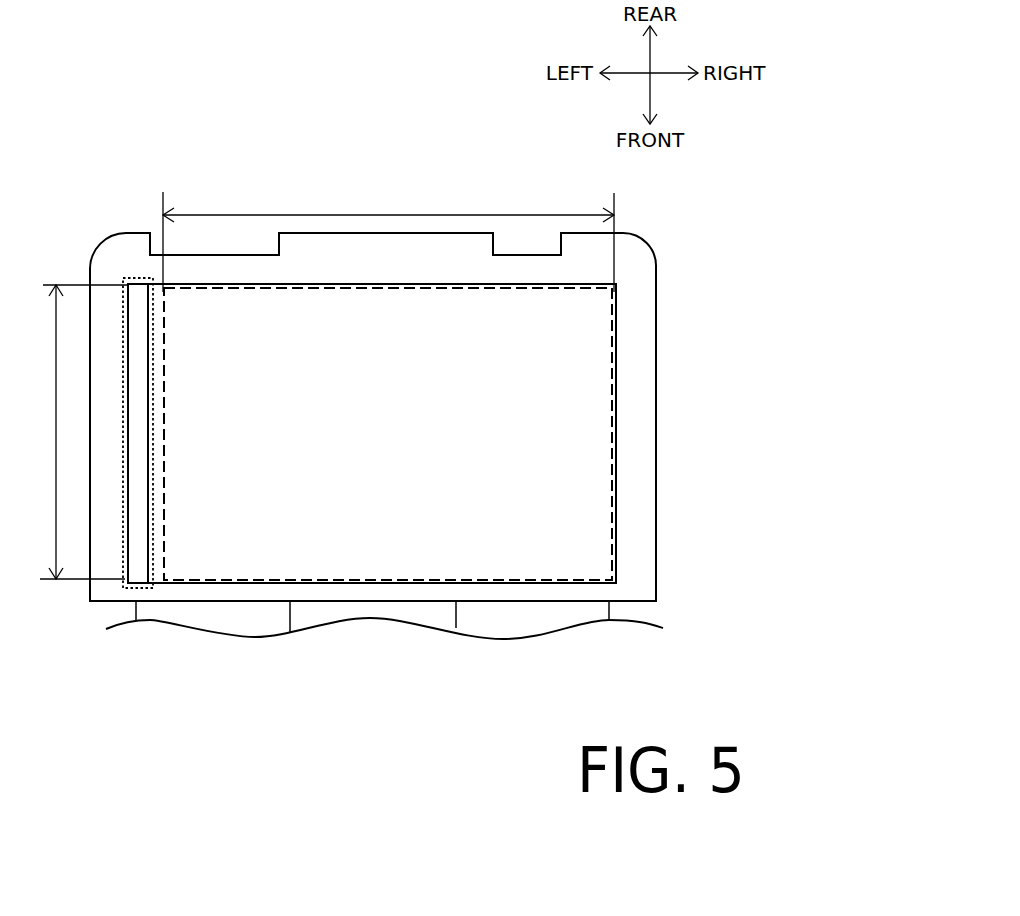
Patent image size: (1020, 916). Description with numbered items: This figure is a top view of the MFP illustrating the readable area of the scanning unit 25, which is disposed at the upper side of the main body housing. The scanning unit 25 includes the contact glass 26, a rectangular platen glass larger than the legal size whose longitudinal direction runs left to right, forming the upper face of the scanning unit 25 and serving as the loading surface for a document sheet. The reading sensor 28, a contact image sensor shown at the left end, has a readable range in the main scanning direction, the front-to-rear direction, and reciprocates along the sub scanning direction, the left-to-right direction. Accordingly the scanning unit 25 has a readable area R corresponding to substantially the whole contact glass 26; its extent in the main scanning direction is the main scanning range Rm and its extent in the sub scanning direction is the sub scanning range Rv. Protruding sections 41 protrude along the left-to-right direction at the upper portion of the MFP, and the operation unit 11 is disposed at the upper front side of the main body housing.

The protruding section 41 is at (84, 274).
The operation unit 11 is at (495, 627).
The contact glass 26 is at (368, 558).
The reading sensor 28 is at (123, 586).
The scanning unit 25 is at (584, 332).
The readable area R is at (618, 427).
The sub scanning range Rv is at (388, 240).
The main scanning range Rm is at (74, 432).